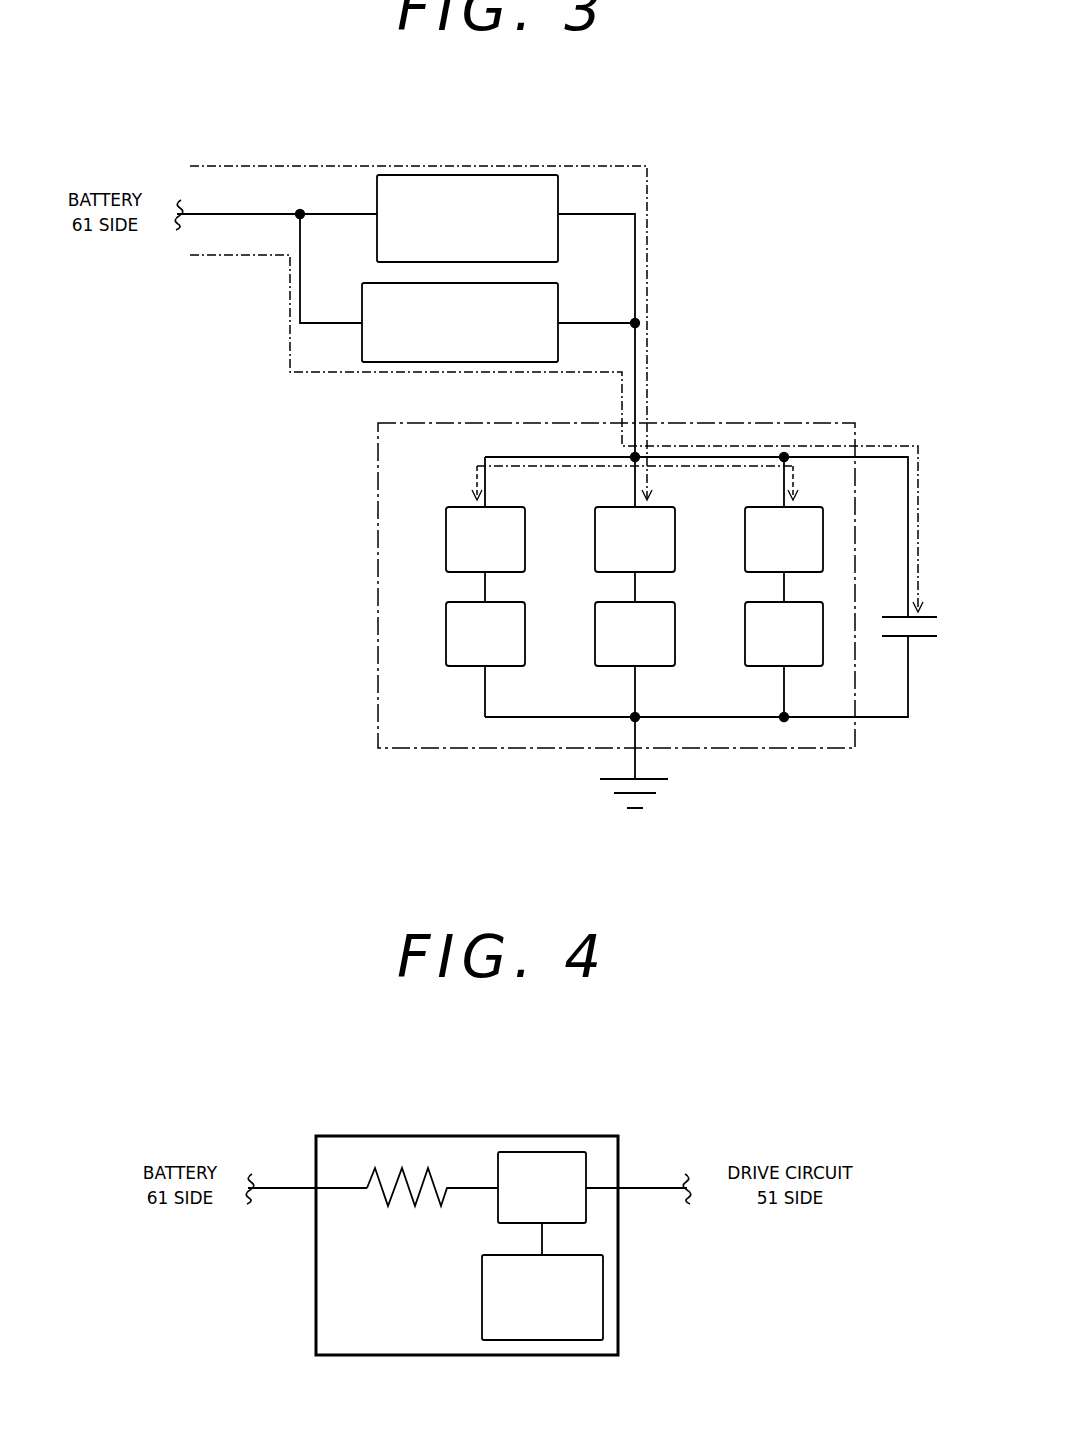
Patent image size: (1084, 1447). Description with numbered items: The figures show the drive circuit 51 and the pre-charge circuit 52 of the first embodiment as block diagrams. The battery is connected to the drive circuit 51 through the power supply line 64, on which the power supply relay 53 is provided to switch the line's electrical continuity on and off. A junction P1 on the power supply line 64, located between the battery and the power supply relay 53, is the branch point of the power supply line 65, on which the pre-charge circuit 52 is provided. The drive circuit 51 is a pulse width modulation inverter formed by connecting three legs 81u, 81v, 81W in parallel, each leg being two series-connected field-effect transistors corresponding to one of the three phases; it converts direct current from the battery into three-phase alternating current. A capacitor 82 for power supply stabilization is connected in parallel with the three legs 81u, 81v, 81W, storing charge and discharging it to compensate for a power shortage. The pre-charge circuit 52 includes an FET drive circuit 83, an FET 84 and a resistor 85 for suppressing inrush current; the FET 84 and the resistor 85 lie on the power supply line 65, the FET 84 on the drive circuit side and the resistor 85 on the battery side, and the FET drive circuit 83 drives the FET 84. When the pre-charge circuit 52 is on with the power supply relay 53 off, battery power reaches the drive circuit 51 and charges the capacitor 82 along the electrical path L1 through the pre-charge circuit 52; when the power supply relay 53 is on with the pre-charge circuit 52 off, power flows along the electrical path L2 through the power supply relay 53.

In FIG. 3, the electrical path L2 is at (221, 165).
In FIG. 3, the electrical path L1 is at (220, 258).
In FIG. 3, the power supply line 64 is at (208, 216).
In FIG. 3, the junction P1 is at (294, 208).
In FIG. 3, the power supply line 65 is at (326, 322).
In FIG. 4, the power supply line 65 is at (283, 1185).
In FIG. 3, the power supply relay 53 is at (487, 175).
In FIG. 3, the pre-charge circuit 52 is at (564, 305).
In FIG. 4, the pre-charge circuit 52 is at (465, 1136).
In FIG. 3, the drive circuit 51 is at (807, 423).
In FIG. 3, the leg 81u is at (443, 500).
In FIG. 3, the leg 81v is at (592, 500).
In FIG. 3, the leg 81W is at (742, 500).
In FIG. 3, the capacitor 82 is at (922, 640).
In FIG. 4, the resistor 85 is at (380, 1202).
In FIG. 4, the FET 84 is at (496, 1210).
In FIG. 4, the FET drive circuit 83 is at (480, 1294).